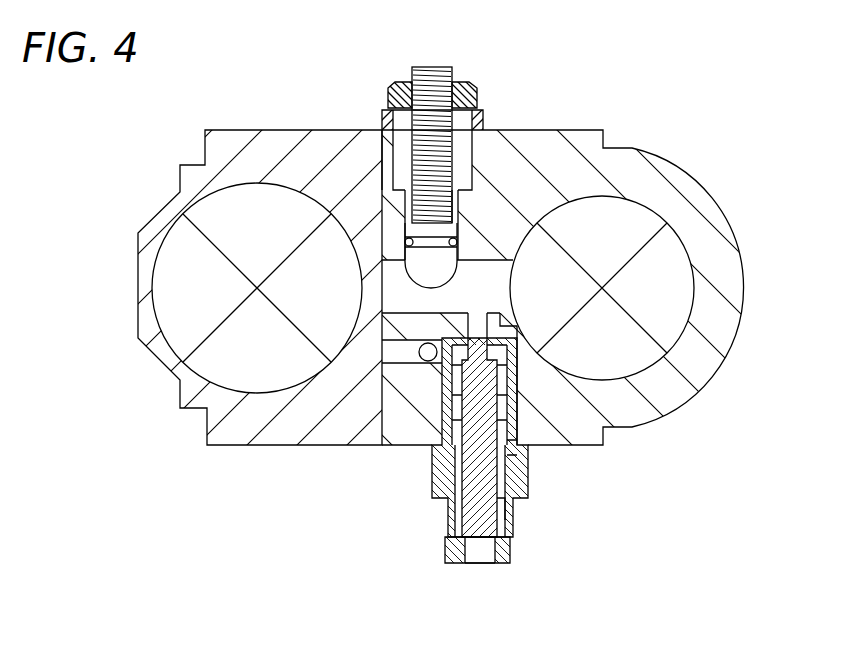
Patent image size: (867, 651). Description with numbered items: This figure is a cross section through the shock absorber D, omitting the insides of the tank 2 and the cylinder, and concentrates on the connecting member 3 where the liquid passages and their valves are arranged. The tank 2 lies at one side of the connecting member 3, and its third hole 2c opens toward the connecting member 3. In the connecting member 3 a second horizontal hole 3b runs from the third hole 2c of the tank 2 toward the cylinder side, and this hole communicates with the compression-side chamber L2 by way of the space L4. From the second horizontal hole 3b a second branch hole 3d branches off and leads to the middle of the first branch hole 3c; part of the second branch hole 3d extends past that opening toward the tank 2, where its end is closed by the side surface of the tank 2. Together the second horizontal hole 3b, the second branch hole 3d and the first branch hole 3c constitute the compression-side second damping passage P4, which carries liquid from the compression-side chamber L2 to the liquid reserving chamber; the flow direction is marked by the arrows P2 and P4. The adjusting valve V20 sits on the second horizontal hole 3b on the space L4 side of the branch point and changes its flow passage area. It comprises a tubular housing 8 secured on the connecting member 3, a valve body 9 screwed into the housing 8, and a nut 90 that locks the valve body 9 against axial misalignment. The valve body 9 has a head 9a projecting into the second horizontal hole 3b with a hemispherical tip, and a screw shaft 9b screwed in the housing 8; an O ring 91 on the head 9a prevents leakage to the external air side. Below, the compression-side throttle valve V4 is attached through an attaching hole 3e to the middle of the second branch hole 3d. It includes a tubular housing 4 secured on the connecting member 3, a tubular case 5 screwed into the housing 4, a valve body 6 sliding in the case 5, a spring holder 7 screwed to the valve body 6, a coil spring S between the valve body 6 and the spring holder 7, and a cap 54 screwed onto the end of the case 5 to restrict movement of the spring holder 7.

The tank 2 is at (231, 127).
The connecting member 3 is at (635, 150).
The tubular housing 4 is at (455, 490).
The tubular case 5 is at (452, 540).
The valve body 6 is at (450, 400).
The spring holder 7 is at (508, 512).
The tubular housing 8 is at (379, 107).
The valve body 9 is at (426, 61).
The head 9a is at (410, 272).
The screw shaft 9b is at (456, 130).
The nut 90 is at (388, 81).
The O ring 91 is at (374, 270).
The third hole 2c is at (385, 298).
The second horizontal hole 3b is at (495, 272).
The first branch hole 3c is at (425, 362).
The second branch hole 3d is at (538, 352).
The attaching holes 3e is at (536, 360).
The cap 54 is at (476, 566).
The coil spring S is at (522, 456).
The shock absorber D is at (175, 168).
The compression-side chamber L2 is at (642, 353).
The space L4 is at (177, 323).
The port P2 is at (407, 309).
The compression-side second damping passage P4 is at (491, 313).
The adjusting valve V20 is at (472, 76).
The compression-side throttle valve V4 is at (504, 570).